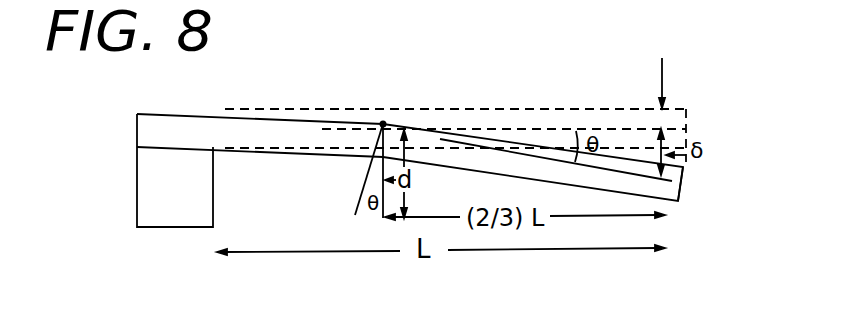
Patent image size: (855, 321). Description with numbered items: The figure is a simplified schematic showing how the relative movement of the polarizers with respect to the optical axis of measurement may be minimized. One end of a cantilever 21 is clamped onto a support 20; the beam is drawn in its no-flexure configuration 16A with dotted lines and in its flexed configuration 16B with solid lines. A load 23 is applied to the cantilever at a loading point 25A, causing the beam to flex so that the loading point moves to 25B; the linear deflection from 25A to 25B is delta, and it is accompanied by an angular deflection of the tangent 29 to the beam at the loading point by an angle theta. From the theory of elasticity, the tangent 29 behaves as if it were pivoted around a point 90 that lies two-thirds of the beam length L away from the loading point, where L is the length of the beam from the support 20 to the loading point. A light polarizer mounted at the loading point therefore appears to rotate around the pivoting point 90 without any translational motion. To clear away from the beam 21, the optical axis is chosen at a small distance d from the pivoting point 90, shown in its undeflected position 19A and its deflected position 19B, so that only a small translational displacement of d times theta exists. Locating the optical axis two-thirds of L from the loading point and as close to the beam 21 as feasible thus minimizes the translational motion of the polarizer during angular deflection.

The support 20 is at (175, 187).
The cantilever 21 is at (260, 135).
The beam in undeflected position 16A is at (455, 106).
The beam in deflected position 16B is at (533, 171).
The load 23 is at (658, 65).
The loading point before flexure 25A is at (714, 131).
The loading point after flexure 25B is at (710, 184).
The tangent to the beam 29 is at (517, 161).
The pivoting point 90 is at (383, 121).
The optical axis before flexure 19A is at (382, 185).
The optical axis after flexure 19B is at (359, 178).